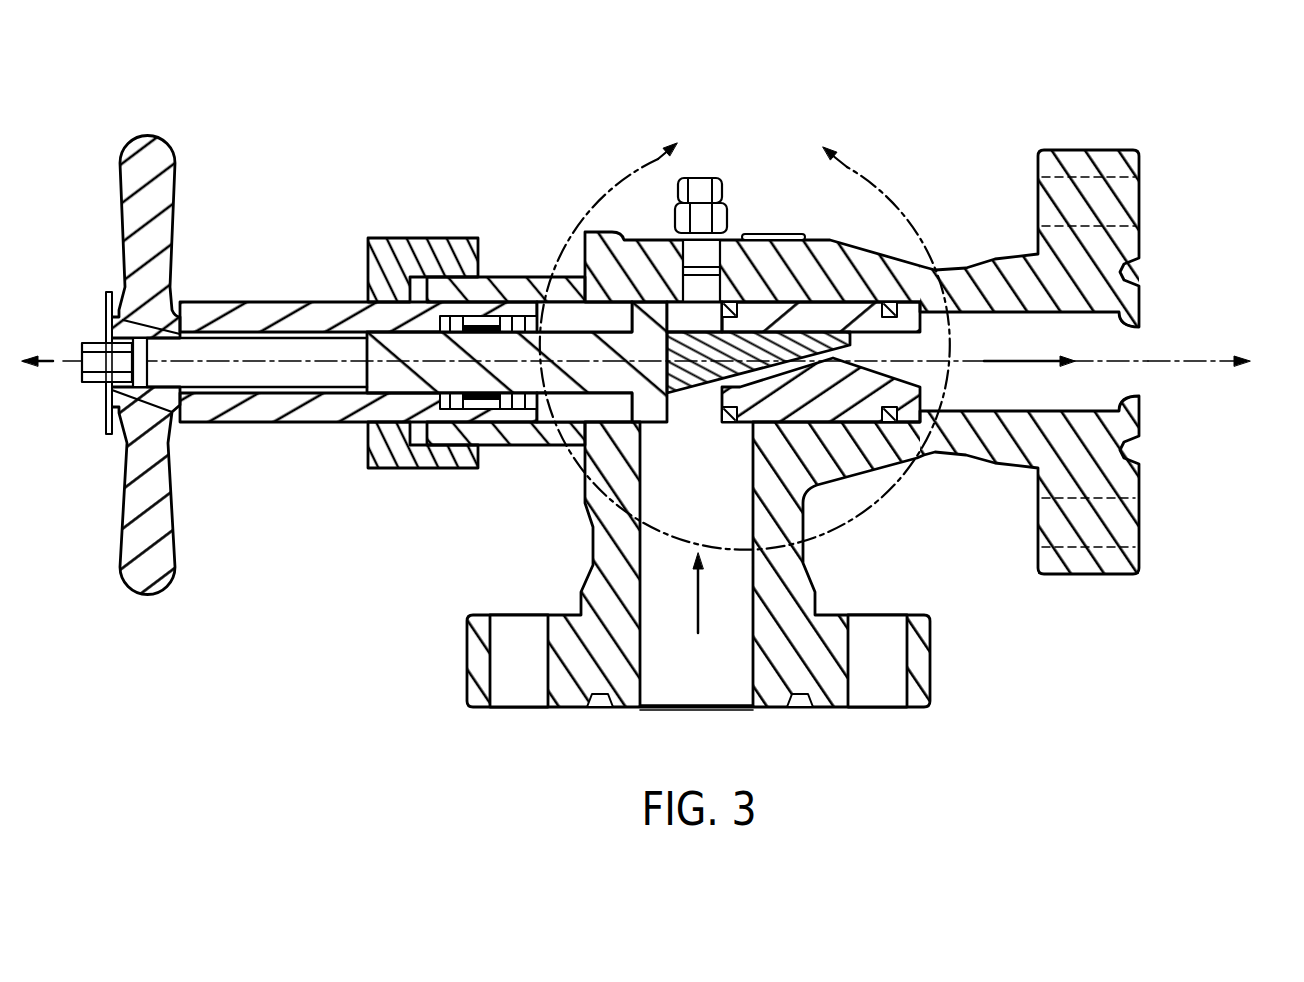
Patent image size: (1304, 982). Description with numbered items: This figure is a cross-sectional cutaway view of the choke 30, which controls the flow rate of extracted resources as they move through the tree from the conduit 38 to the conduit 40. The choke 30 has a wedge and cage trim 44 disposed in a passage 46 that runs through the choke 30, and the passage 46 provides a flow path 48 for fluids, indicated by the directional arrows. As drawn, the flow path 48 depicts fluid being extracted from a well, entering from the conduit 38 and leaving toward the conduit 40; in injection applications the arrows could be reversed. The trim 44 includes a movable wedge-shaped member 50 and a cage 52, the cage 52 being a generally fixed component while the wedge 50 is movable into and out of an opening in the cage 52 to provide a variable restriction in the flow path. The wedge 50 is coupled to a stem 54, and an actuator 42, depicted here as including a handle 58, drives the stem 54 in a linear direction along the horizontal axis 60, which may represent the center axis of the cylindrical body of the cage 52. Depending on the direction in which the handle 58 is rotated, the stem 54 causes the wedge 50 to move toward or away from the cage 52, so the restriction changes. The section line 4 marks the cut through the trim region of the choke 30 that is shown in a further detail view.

The choke 30 is at (398, 170).
The section line 4- 4 is at (745, 331).
The conduit 38 is at (699, 739).
The conduit 40 is at (1217, 332).
The actuator 42 is at (157, 128).
The wedge and cage trim 44 is at (772, 203).
The passage 46 is at (1140, 327).
The flow path 48 is at (1026, 360).
The wedge-shaped member 50 is at (687, 396).
The cage 52 is at (817, 295).
The stem 54 is at (618, 300).
The handle 58 is at (118, 172).
The horizontal axis 60 is at (53, 361).